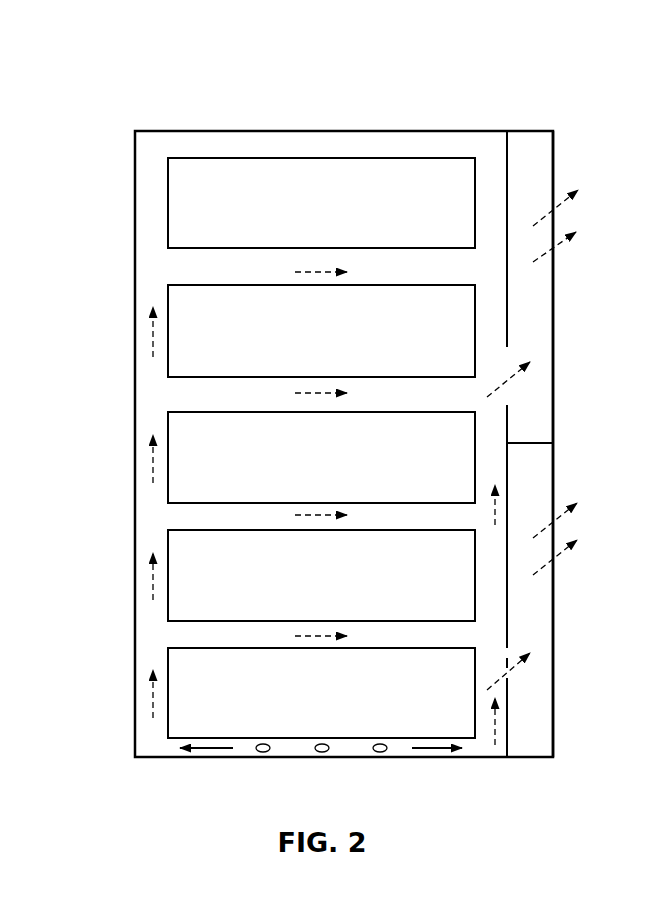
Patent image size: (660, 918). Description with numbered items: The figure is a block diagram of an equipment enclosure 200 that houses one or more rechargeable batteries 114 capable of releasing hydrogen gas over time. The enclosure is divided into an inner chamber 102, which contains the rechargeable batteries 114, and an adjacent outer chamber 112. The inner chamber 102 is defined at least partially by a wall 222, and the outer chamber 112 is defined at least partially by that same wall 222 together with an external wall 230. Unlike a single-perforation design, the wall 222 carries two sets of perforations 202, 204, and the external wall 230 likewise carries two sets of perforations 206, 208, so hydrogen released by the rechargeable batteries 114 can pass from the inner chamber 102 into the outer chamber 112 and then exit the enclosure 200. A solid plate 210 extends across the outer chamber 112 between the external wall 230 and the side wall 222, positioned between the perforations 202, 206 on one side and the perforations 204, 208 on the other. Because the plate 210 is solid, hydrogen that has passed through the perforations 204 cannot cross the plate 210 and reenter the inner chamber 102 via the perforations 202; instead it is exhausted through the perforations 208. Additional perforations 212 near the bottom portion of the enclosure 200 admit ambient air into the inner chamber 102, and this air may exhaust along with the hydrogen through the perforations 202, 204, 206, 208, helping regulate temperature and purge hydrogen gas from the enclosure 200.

The equipment enclosure 200 is at (186, 73).
The inner chamber 102 is at (303, 143).
The outer chamber 112 is at (541, 160).
The rechargeable batteries 114 is at (300, 342).
The perforations 202 is at (507, 405).
The perforations 204 is at (507, 648).
The perforations 206 is at (553, 252).
The perforations 208 is at (553, 560).
The plate 210 is at (530, 443).
The perforations 212 is at (263, 752).
The wall 222 is at (507, 347).
The external wall 230 is at (553, 295).